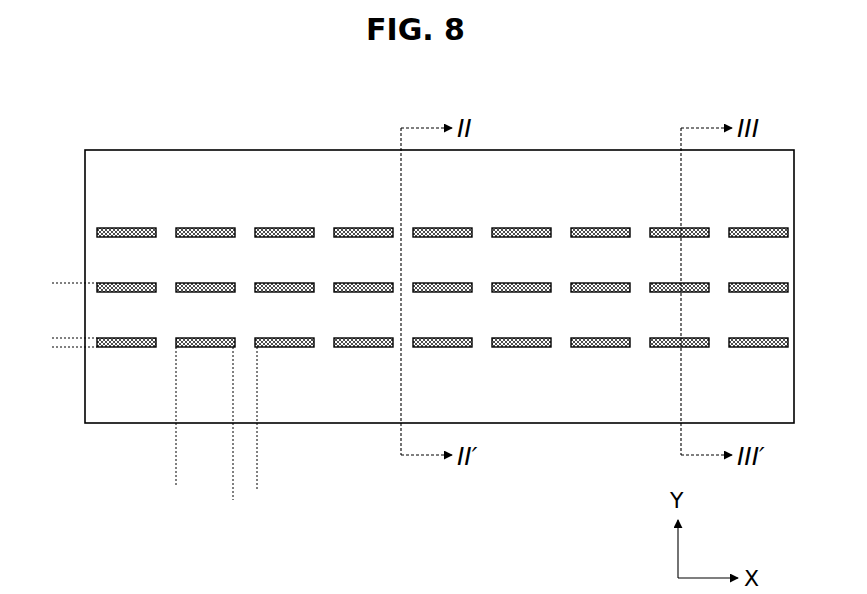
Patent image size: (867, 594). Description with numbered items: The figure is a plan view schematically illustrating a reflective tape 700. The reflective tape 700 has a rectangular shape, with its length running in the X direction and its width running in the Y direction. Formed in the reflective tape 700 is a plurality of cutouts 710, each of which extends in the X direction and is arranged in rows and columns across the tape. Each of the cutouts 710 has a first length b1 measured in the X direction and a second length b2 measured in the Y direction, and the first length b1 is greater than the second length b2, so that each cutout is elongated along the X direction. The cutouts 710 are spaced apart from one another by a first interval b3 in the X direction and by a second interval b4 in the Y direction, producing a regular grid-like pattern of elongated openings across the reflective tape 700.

The reflective tape 700 is at (154, 175).
The cutouts 710 is at (209, 222).
The first length b1 is at (233, 462).
The second length b2 is at (68, 310).
The first interval b3 is at (288, 462).
The second interval b4 is at (68, 283).